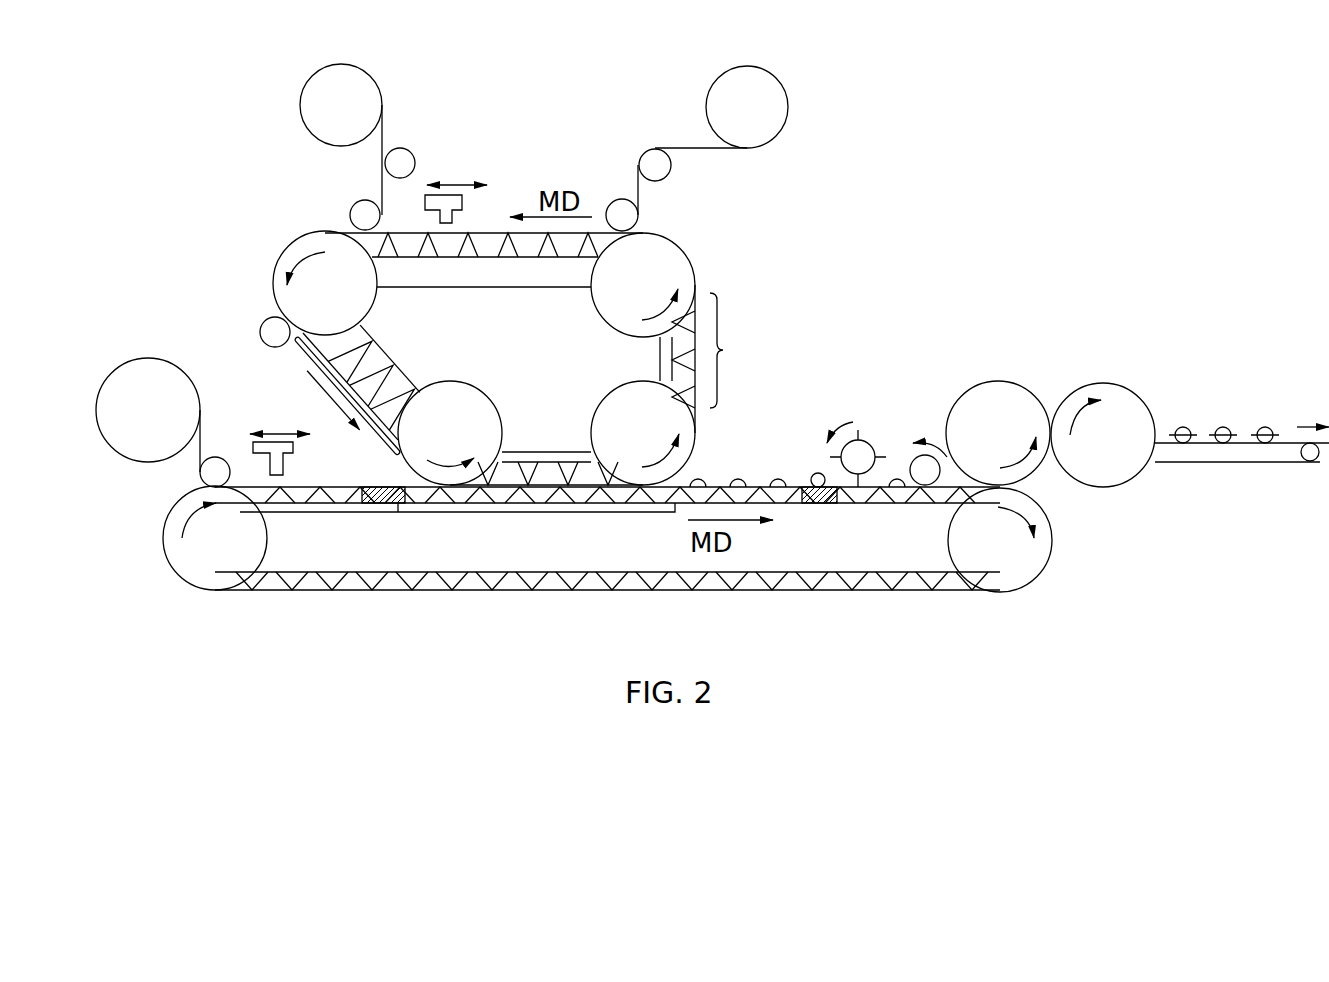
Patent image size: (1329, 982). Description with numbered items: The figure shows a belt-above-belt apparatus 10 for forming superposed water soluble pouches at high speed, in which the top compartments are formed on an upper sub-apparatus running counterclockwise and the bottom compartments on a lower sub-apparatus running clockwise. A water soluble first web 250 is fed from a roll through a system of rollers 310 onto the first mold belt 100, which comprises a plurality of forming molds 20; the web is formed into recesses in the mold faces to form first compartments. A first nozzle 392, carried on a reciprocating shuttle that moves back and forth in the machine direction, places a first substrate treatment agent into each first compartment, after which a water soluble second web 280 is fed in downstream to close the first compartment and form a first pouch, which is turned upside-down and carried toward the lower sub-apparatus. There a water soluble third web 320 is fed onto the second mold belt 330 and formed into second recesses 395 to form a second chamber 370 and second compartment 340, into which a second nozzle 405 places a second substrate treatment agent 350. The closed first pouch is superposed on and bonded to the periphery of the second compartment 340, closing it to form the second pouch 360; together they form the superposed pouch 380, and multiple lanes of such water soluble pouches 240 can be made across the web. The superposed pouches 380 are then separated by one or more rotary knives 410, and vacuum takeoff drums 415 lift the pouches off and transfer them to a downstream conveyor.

The apparatus 10 is at (818, 283).
The forming molds 20 is at (410, 248).
The first mold belt 100 is at (744, 350).
The superposed water soluble pouch 240 is at (733, 482).
The first web 250 is at (680, 147).
The second web 280 is at (380, 190).
The rollers 310 is at (360, 294).
The third web 320 is at (205, 442).
The second mold belt 330 is at (352, 592).
The second compartment 340 is at (377, 503).
The second substrate treatment agent 350 is at (383, 487).
The second pouch 360 is at (830, 503).
The second chamber 370 is at (817, 503).
The superposed pouch 380 is at (815, 474).
The first nozzle 392 is at (462, 203).
The second recesses 395 is at (398, 503).
The second nozzle 405 is at (277, 452).
The rotary knives 410 is at (922, 455).
The vacuum takeoff drums 415 is at (1102, 382).